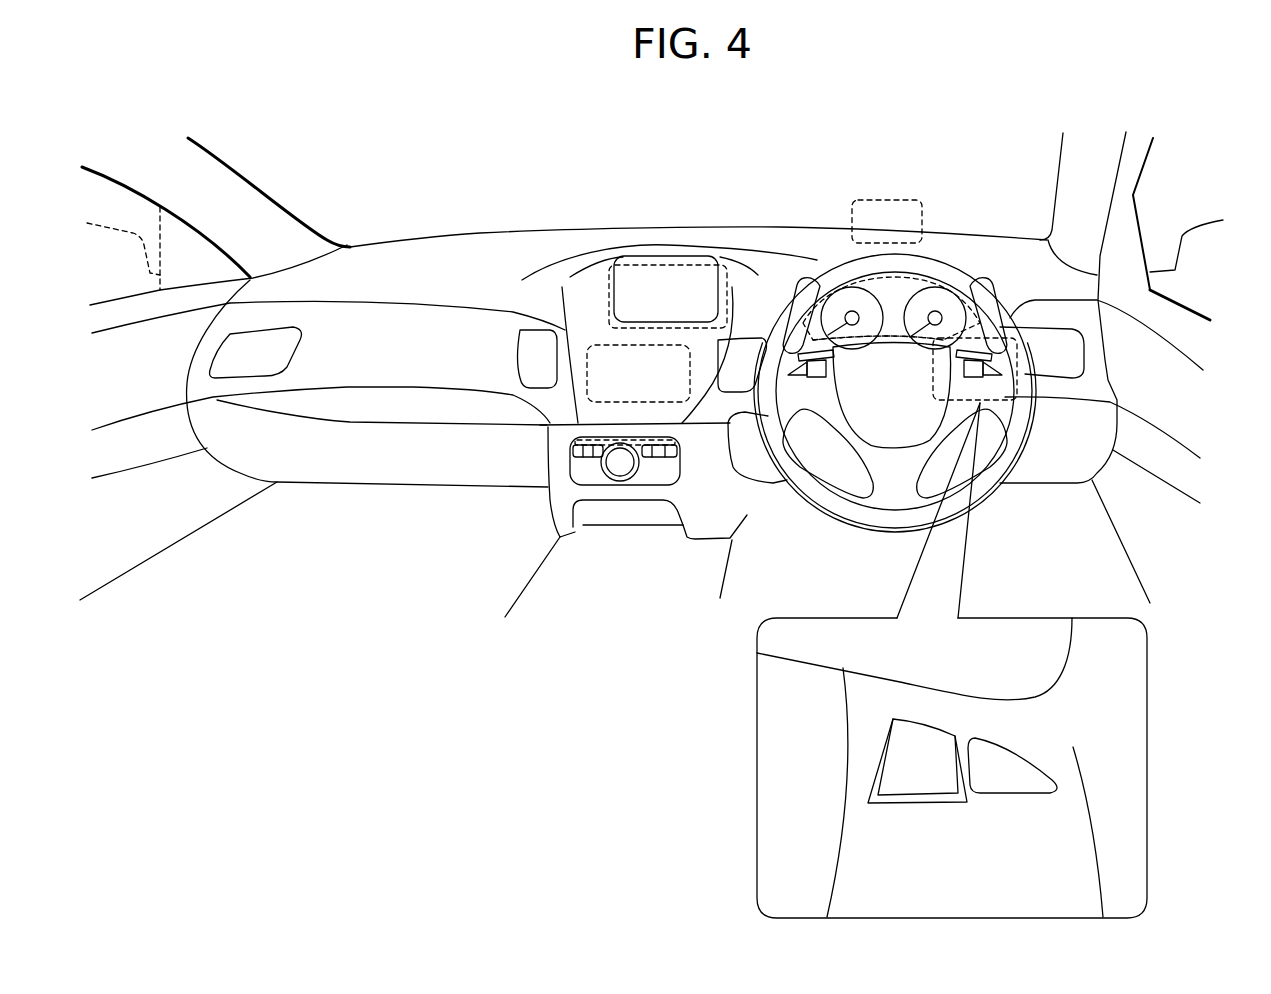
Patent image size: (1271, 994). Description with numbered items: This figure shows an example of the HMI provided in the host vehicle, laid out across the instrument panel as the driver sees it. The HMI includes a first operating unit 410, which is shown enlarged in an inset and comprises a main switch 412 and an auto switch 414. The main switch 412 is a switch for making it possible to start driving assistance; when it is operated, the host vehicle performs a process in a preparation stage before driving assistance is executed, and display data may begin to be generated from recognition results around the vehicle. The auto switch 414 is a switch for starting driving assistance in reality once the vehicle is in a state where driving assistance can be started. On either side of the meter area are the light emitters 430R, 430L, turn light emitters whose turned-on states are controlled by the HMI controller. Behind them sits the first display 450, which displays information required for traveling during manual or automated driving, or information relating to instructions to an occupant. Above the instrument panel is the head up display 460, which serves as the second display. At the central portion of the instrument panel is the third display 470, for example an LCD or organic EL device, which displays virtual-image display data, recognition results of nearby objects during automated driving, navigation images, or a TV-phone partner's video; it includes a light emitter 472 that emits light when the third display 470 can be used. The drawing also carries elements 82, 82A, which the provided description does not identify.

The steering wheel 82 is at (987, 490).
The grip sensor 82A is at (810, 283).
The first operating unit 410 is at (1012, 410).
The main switch 412 is at (920, 808).
The auto switch 414 is at (1016, 797).
The light emitter 430L is at (801, 352).
The light emitter 430R is at (989, 352).
The first display 450 is at (895, 347).
The head up display (second display) 460 is at (885, 198).
The third display 470 is at (609, 278).
The light emitter 472 is at (673, 255).